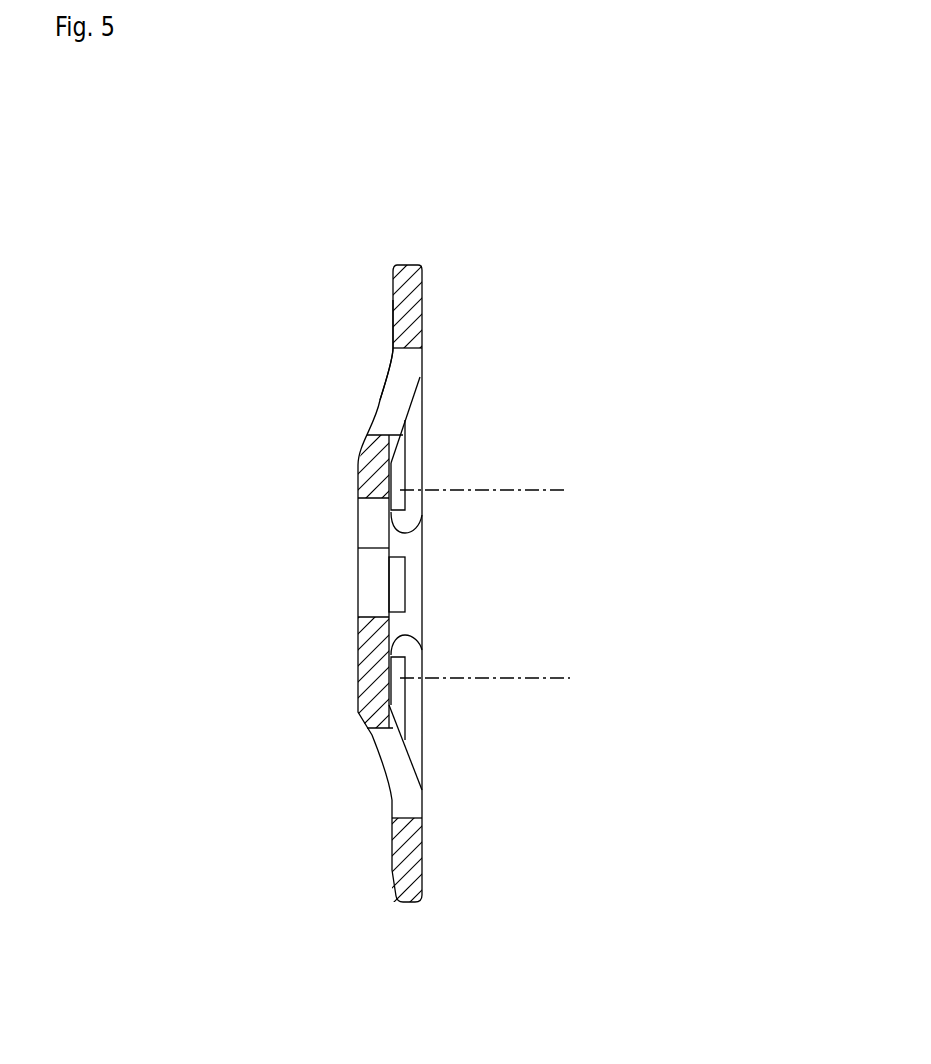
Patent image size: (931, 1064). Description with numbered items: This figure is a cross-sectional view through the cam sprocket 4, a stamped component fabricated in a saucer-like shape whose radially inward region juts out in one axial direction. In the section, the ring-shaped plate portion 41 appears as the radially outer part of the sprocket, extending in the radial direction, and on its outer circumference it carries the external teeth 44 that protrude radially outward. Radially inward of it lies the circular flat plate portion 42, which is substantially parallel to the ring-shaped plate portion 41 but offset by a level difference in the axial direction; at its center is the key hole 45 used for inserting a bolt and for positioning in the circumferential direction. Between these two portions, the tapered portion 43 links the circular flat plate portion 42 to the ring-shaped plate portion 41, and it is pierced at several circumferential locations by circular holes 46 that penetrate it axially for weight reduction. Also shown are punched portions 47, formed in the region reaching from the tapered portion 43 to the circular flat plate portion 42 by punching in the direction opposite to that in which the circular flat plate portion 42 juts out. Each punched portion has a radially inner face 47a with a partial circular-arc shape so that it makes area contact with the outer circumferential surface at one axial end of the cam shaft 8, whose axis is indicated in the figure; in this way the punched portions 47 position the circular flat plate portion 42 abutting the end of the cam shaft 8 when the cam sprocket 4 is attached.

The cam sprocket 4 is at (360, 243).
The ring-shaped plate portion 41 is at (392, 310).
The circular flat plate portion 42 is at (356, 468).
The tapered portion 43 is at (375, 402).
The external teeth 44 is at (408, 265).
The key hole 45 is at (375, 585).
The circular holes 46 is at (407, 378).
The punched portions 47 is at (407, 477).
The radially inner faces 47a is at (390, 522).
The cam shaft 8 is at (535, 490).